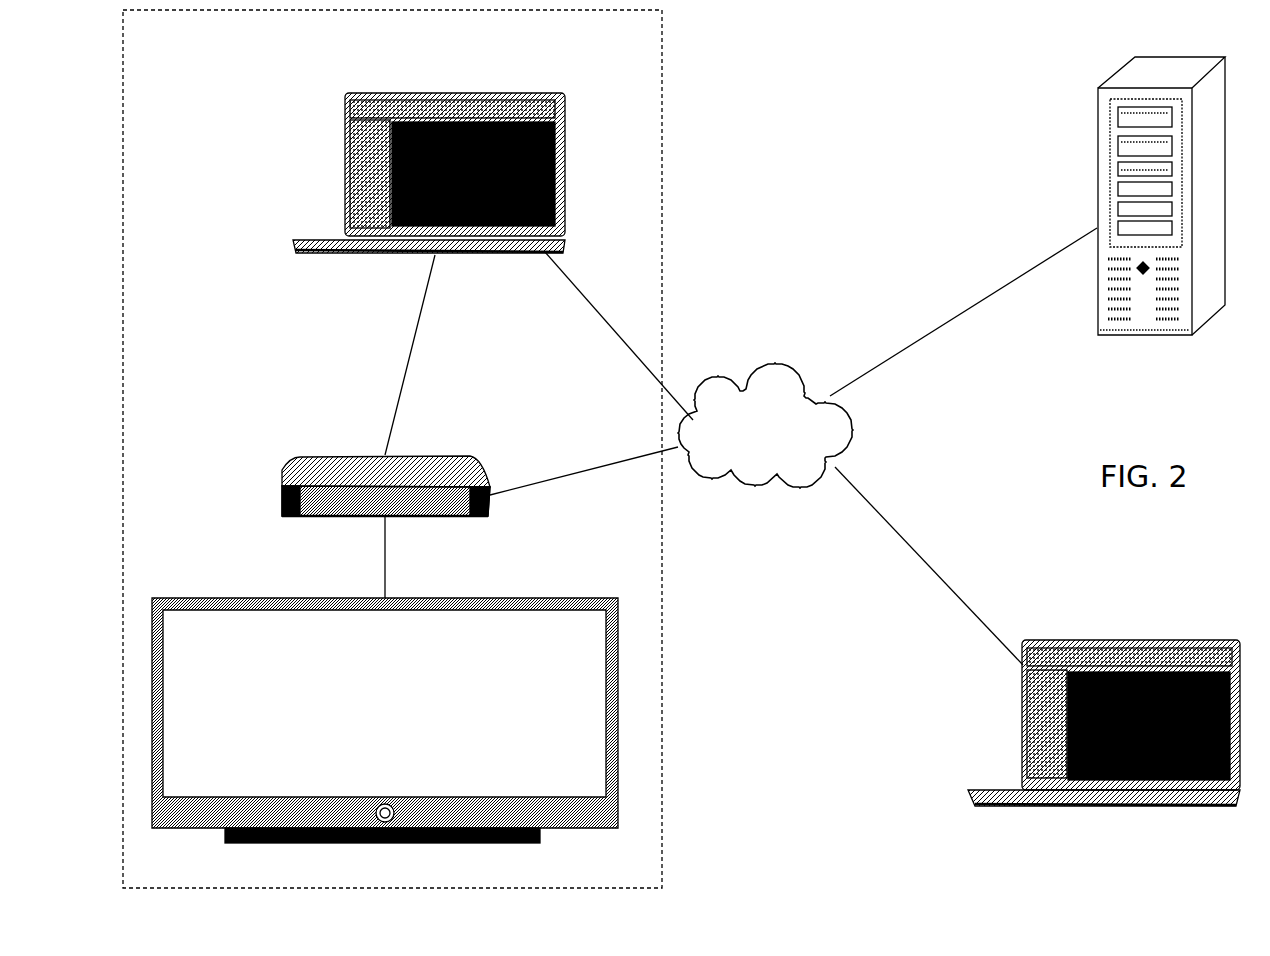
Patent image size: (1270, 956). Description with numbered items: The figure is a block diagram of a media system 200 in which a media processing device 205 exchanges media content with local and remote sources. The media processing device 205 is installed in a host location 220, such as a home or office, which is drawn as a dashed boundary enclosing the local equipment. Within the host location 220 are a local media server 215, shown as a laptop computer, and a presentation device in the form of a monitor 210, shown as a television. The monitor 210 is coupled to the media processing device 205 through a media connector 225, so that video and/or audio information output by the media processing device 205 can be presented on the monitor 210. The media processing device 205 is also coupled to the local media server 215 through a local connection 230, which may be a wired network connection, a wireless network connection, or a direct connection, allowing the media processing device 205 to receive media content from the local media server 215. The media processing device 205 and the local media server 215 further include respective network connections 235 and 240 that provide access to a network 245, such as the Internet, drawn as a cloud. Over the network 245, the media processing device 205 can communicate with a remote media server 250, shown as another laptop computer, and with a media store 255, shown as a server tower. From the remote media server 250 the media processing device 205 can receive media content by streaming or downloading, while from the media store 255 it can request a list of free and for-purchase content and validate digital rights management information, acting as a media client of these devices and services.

The media system 200 is at (791, 165).
The media processing device 205 is at (290, 470).
The monitor 210 is at (487, 600).
The local media server 215 is at (345, 118).
The host location 220 is at (665, 275).
The media connector 225 is at (386, 578).
The local connection 230 is at (410, 358).
The network connection 235 is at (592, 467).
The network connection 240 is at (572, 282).
The network 245 is at (766, 366).
The remote media server 250 is at (970, 796).
The media store 255 is at (1095, 108).